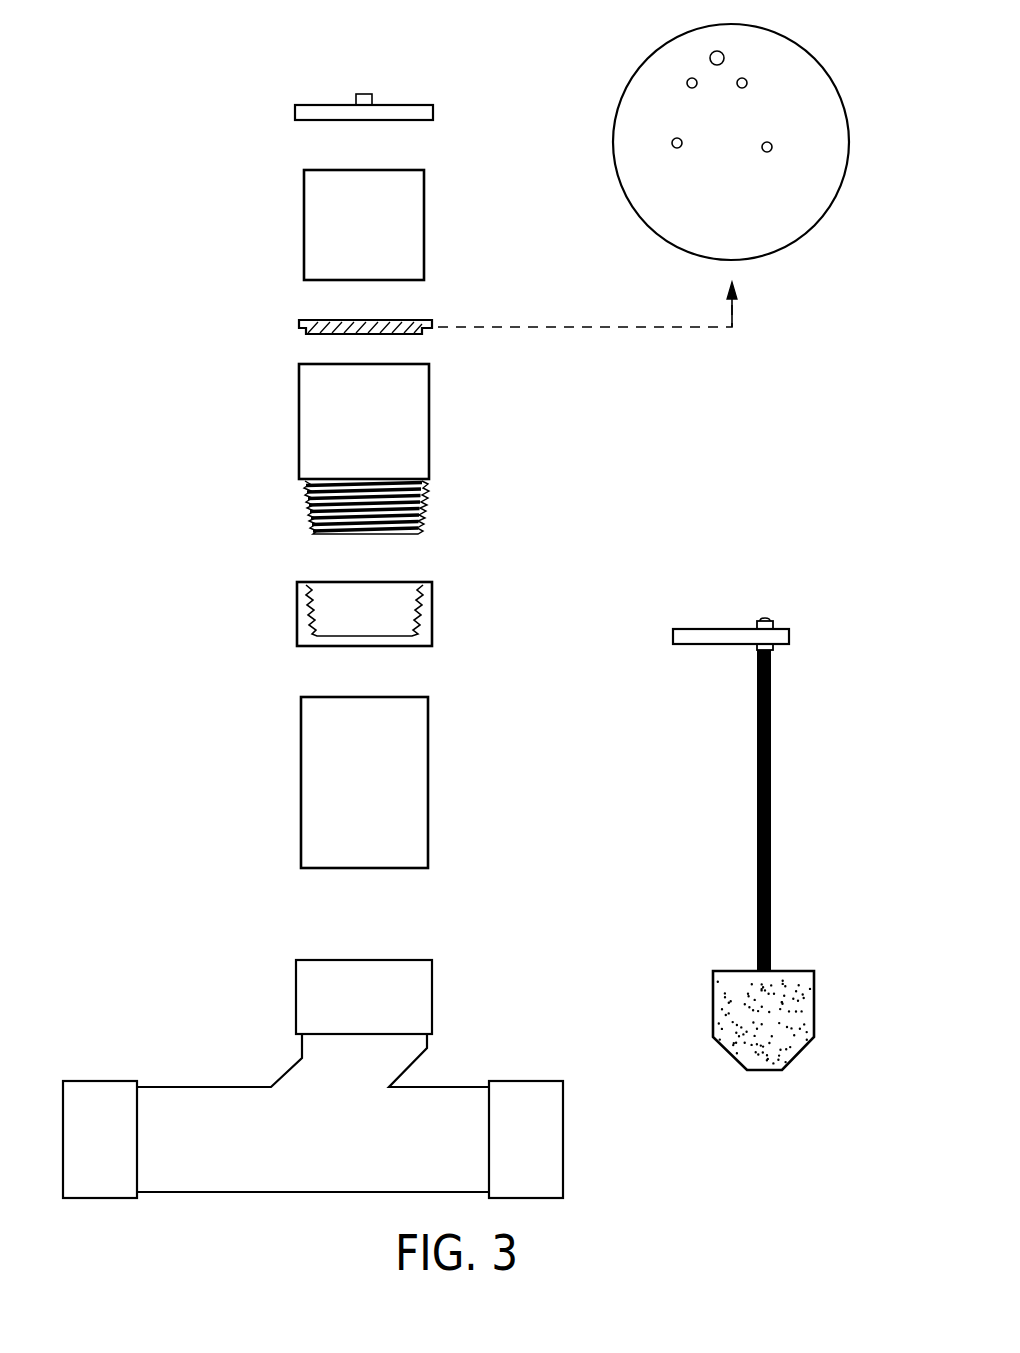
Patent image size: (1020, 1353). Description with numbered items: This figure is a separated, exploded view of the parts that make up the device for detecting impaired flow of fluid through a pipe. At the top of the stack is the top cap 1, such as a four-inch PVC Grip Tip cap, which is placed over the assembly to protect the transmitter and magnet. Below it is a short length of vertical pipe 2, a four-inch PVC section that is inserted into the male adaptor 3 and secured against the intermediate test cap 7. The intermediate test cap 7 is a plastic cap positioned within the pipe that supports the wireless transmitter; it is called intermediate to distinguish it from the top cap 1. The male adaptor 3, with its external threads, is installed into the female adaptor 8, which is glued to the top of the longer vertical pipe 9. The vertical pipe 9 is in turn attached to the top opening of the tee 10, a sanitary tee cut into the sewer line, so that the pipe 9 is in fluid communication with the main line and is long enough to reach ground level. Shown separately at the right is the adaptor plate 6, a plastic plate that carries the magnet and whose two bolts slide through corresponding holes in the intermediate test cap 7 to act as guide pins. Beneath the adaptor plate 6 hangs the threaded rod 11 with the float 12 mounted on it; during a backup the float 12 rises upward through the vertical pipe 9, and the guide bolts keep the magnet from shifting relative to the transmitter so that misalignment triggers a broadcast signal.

The top cap 1 is at (400, 104).
The vertical pipe 2 is at (424, 247).
The male adaptor 3 is at (429, 385).
The adaptor plate 6 is at (789, 637).
The intermediate test cap 7 is at (299, 324).
The female adaptor 8 is at (424, 637).
The vertical pipe 9 is at (421, 806).
The tee 10 is at (471, 1092).
The threaded rod 11 is at (757, 863).
The float 12 is at (713, 1021).